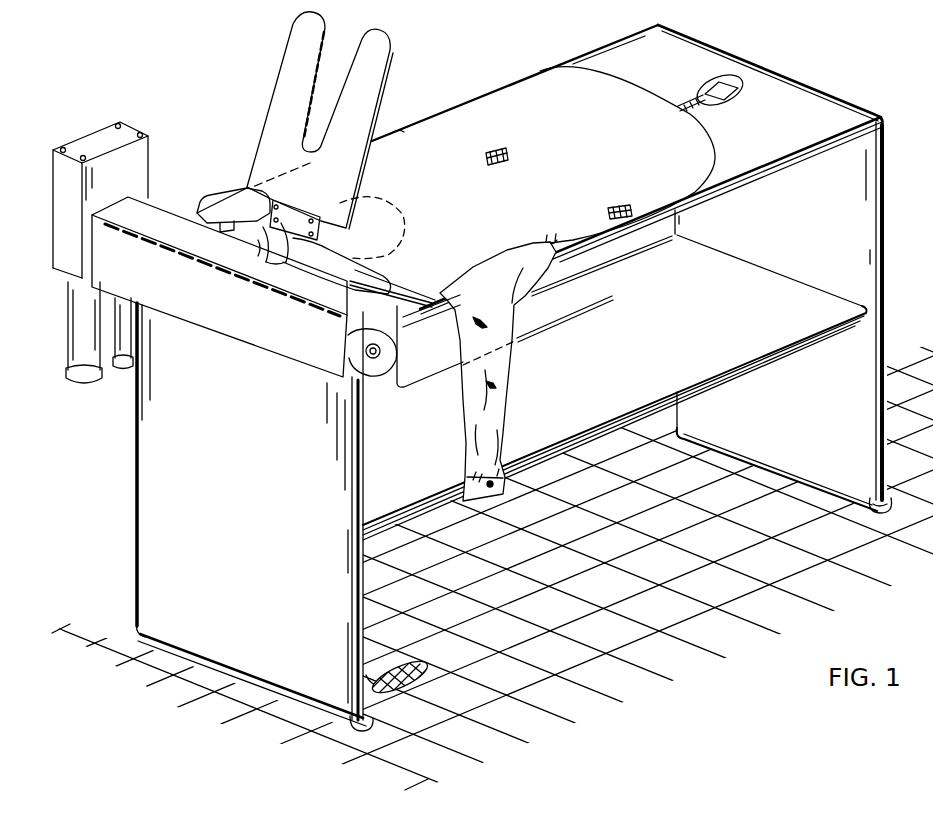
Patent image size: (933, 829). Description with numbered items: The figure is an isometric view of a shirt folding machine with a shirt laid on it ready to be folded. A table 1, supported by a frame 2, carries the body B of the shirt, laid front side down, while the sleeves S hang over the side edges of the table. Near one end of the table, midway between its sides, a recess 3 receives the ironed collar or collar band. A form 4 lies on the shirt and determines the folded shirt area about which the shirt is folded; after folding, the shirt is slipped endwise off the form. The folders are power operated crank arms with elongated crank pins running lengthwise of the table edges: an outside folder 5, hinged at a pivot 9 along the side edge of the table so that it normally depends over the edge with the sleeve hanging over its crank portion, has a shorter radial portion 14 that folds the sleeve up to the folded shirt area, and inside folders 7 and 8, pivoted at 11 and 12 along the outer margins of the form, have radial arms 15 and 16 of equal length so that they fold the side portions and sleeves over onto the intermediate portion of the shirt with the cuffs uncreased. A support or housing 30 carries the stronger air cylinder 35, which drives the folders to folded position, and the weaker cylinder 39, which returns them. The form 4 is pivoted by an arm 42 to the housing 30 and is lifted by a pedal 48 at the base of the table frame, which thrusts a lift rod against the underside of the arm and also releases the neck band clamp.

The table 1 is at (727, 168).
The frame 2 is at (140, 473).
The recess 3 is at (383, 228).
The form 4 is at (370, 74).
The outside folder 5 is at (513, 342).
The inside folder 7 is at (520, 268).
The inside folder 8 is at (247, 187).
The pivot of outside folder 9 is at (424, 305).
The pivot of inside folder 11 is at (378, 262).
The pivot of inside folder 12 is at (278, 218).
The radial portion 14 is at (400, 355).
The radial arm 15 is at (392, 273).
The radial arm 16 is at (221, 212).
The support or housing 30 is at (244, 287).
The cylinder of the stronger motor 35 is at (70, 354).
The cylinder of the weaker unit 39 is at (133, 367).
The arm 42 is at (268, 262).
The pedal 48 is at (405, 666).
The body of the shirt B is at (568, 155).
The sleeves S is at (502, 378).